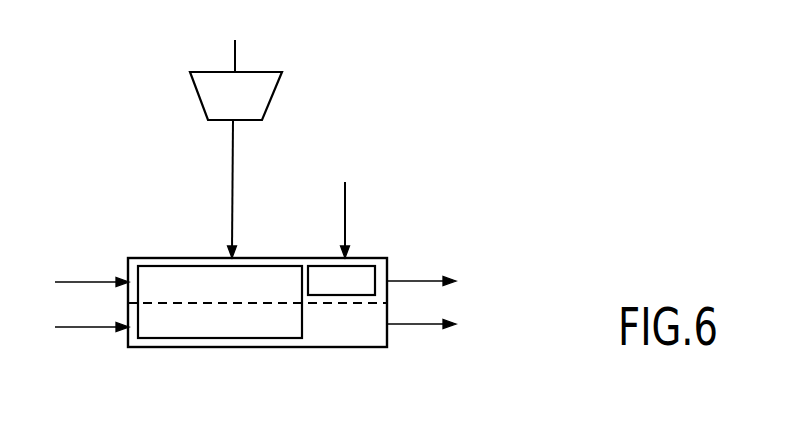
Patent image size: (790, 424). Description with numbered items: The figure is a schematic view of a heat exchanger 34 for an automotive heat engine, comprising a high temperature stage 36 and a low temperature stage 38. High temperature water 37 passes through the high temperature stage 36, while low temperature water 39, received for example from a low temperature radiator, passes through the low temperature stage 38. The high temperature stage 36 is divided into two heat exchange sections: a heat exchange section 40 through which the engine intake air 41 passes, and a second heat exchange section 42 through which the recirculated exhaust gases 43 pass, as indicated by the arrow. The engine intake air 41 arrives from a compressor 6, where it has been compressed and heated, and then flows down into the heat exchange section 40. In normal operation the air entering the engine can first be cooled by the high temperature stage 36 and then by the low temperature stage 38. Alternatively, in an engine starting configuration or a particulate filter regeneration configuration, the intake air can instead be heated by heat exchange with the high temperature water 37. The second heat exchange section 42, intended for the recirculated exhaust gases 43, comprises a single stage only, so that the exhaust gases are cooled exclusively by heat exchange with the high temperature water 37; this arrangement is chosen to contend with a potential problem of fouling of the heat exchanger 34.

The compressor 6 is at (198, 96).
The engine intake air 41 is at (232, 178).
The recirculated exhaust gases 43 is at (343, 207).
The high temperature stage 36 is at (390, 265).
The heat exchange section 40 is at (182, 272).
The heat exchange section 42 is at (357, 270).
The high temperature water 37 is at (74, 282).
The low temperature water 39 is at (71, 329).
The low temperature stage 38 is at (391, 348).
The heat exchanger 34 is at (172, 346).